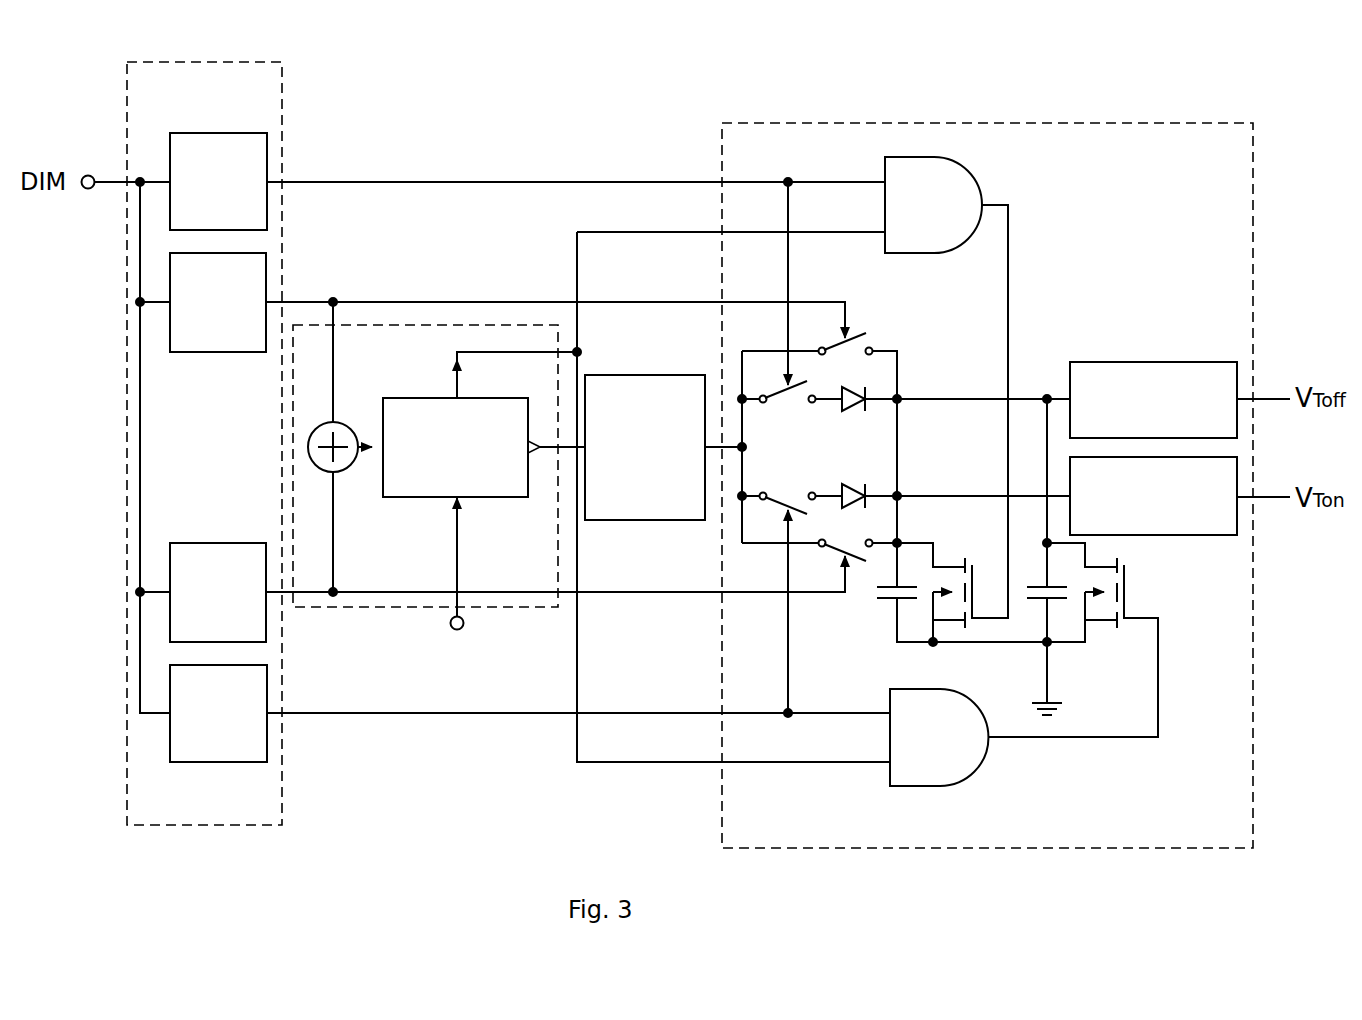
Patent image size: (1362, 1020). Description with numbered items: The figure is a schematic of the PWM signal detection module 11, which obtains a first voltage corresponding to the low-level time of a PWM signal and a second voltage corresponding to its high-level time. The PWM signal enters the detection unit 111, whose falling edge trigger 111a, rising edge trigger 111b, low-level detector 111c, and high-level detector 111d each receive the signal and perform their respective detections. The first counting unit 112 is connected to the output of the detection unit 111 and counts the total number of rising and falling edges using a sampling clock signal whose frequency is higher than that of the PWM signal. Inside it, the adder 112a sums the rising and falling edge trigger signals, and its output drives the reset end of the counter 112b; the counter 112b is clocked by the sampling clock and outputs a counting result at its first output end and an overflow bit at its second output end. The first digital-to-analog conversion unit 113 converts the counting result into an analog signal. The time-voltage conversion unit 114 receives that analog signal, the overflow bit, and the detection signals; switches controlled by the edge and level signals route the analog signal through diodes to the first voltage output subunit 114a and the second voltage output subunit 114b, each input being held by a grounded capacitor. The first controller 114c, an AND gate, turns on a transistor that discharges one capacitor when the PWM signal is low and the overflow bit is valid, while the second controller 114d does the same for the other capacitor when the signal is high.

The PWM signal detection module 11 is at (1060, 93).
The detection unit 111 is at (282, 158).
The falling edge trigger 111a is at (198, 543).
The rising edge trigger 111b is at (227, 353).
The low-level detector 111c is at (197, 133).
The high-level detector 111d is at (220, 762).
The first counting unit 112 is at (385, 607).
The adder 112a is at (343, 423).
The counter 112b is at (417, 497).
The first digital-to-analog conversion unit 113 is at (618, 375).
The time-voltage conversion unit 114 is at (917, 123).
The first voltage output subunit 114a is at (1110, 362).
The second voltage output subunit 114b is at (1205, 535).
The first controller 114c is at (980, 180).
The second controller 114d is at (933, 786).